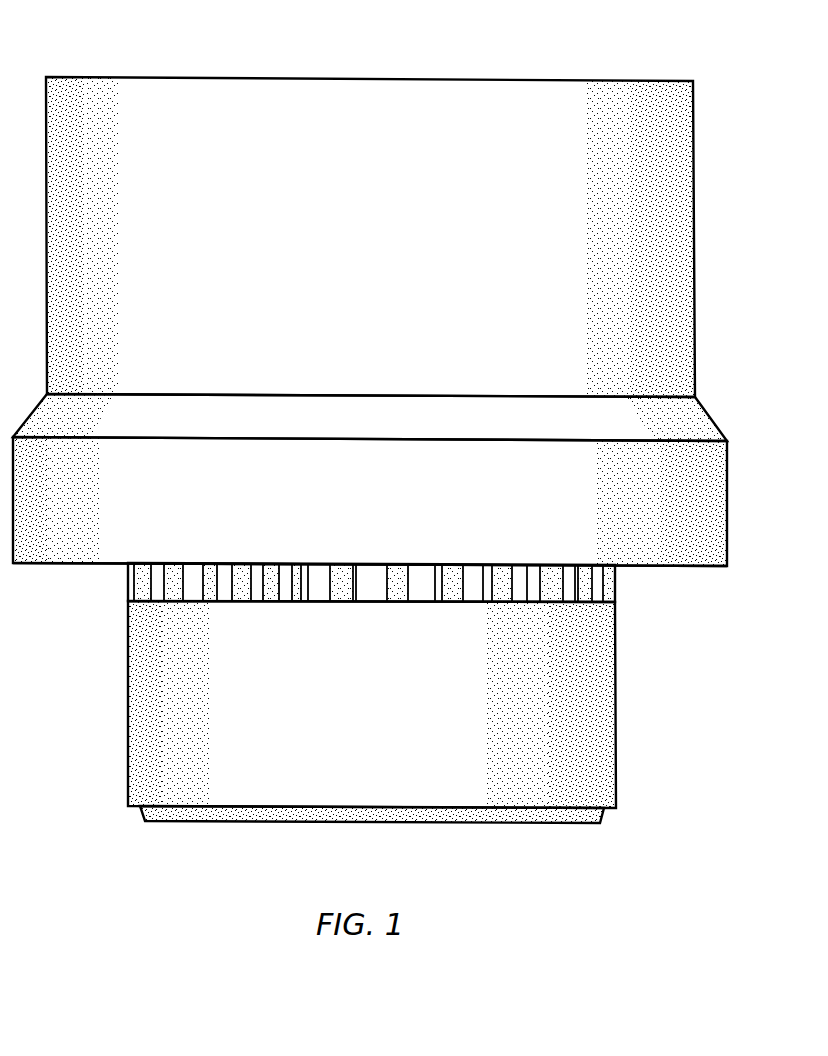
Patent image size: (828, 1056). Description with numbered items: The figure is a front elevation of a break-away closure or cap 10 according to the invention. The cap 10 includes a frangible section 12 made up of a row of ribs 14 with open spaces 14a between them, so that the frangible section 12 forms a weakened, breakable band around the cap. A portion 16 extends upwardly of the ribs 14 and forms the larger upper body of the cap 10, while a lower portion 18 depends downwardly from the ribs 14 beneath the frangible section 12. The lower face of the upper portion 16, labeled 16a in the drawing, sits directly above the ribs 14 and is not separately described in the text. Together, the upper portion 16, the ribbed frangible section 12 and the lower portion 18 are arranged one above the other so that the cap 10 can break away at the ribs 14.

The closure or cap 10 is at (391, 423).
The frangible section 12 is at (344, 584).
The ribs 14 is at (340, 597).
The open spaces 14a is at (318, 572).
The portion extending upwardly of ribs 16 is at (742, 567).
The lower surface of upper body portion 16a is at (665, 567).
The lower portion 18 is at (633, 603).